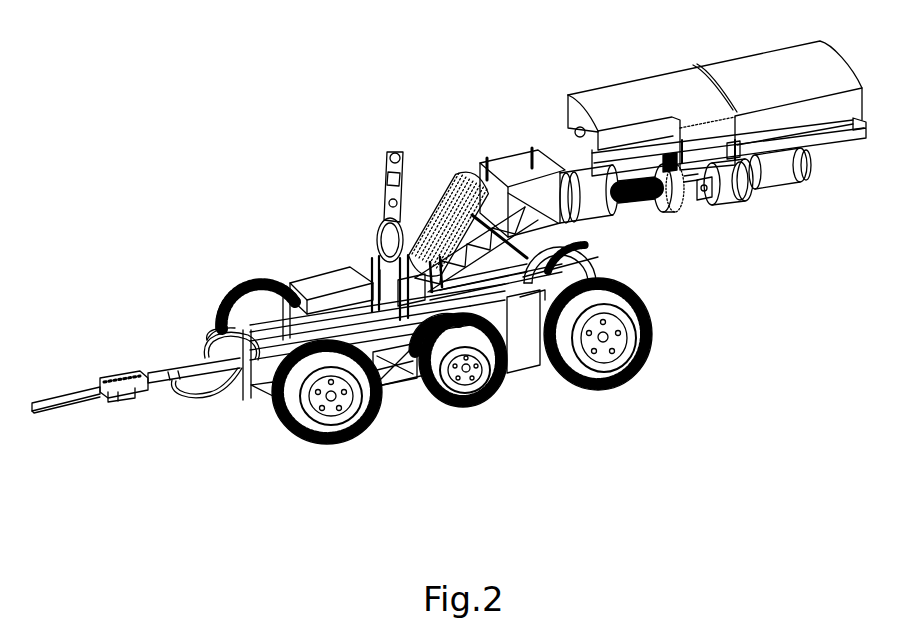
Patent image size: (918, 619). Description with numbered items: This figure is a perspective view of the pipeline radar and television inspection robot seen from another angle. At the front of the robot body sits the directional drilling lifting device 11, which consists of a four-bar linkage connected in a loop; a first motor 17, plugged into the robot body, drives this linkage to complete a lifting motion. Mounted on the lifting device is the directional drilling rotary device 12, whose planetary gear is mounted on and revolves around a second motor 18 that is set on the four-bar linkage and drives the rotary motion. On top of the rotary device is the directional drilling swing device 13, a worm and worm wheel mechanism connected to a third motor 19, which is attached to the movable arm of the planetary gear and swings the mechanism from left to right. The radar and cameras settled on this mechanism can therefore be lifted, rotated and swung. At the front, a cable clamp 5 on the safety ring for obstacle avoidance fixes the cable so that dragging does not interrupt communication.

The cable clamp 5 is at (112, 380).
The directional drilling lifting device 11 is at (422, 240).
The directional drilling rotary device 12 is at (487, 165).
The directional drilling swing device 13 is at (560, 128).
The first motor 17 is at (492, 383).
The second motor 18 is at (590, 263).
The third motor 19 is at (645, 203).